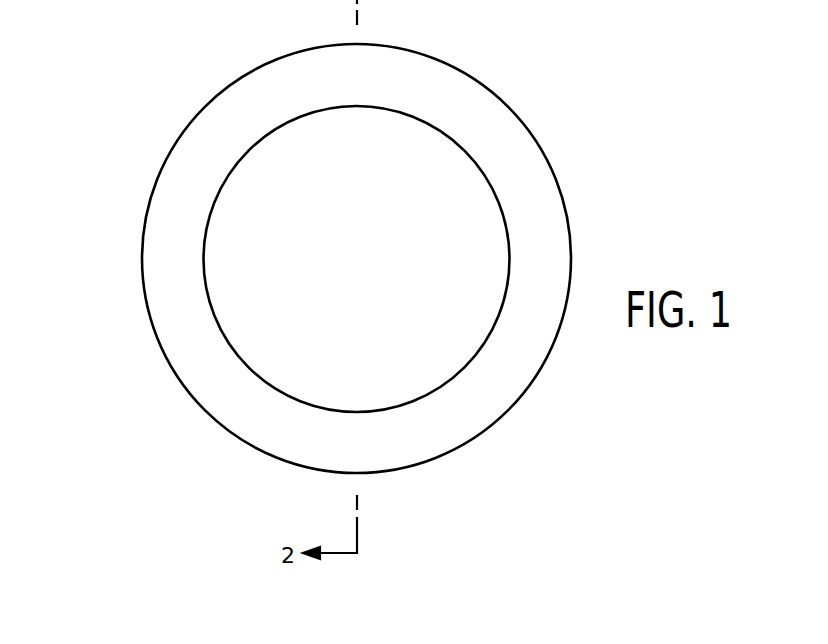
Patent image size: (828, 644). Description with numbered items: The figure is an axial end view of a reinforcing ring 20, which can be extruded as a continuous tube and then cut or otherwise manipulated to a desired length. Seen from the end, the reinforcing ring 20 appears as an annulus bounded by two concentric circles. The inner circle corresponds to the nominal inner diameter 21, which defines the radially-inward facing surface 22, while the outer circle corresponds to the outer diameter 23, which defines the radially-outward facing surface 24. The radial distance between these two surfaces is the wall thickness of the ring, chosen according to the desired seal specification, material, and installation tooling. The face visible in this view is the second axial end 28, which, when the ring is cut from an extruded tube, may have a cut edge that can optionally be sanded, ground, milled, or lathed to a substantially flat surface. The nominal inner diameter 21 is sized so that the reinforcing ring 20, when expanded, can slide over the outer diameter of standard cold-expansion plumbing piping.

The reinforcing ring 20 is at (168, 63).
The nominal inner diameter 21 is at (277, 127).
The radially-inward facing surface 22 is at (465, 152).
The outer diameter 23 is at (162, 169).
The radially-outward facing surface 24 is at (510, 107).
The second axial end 28 is at (187, 272).